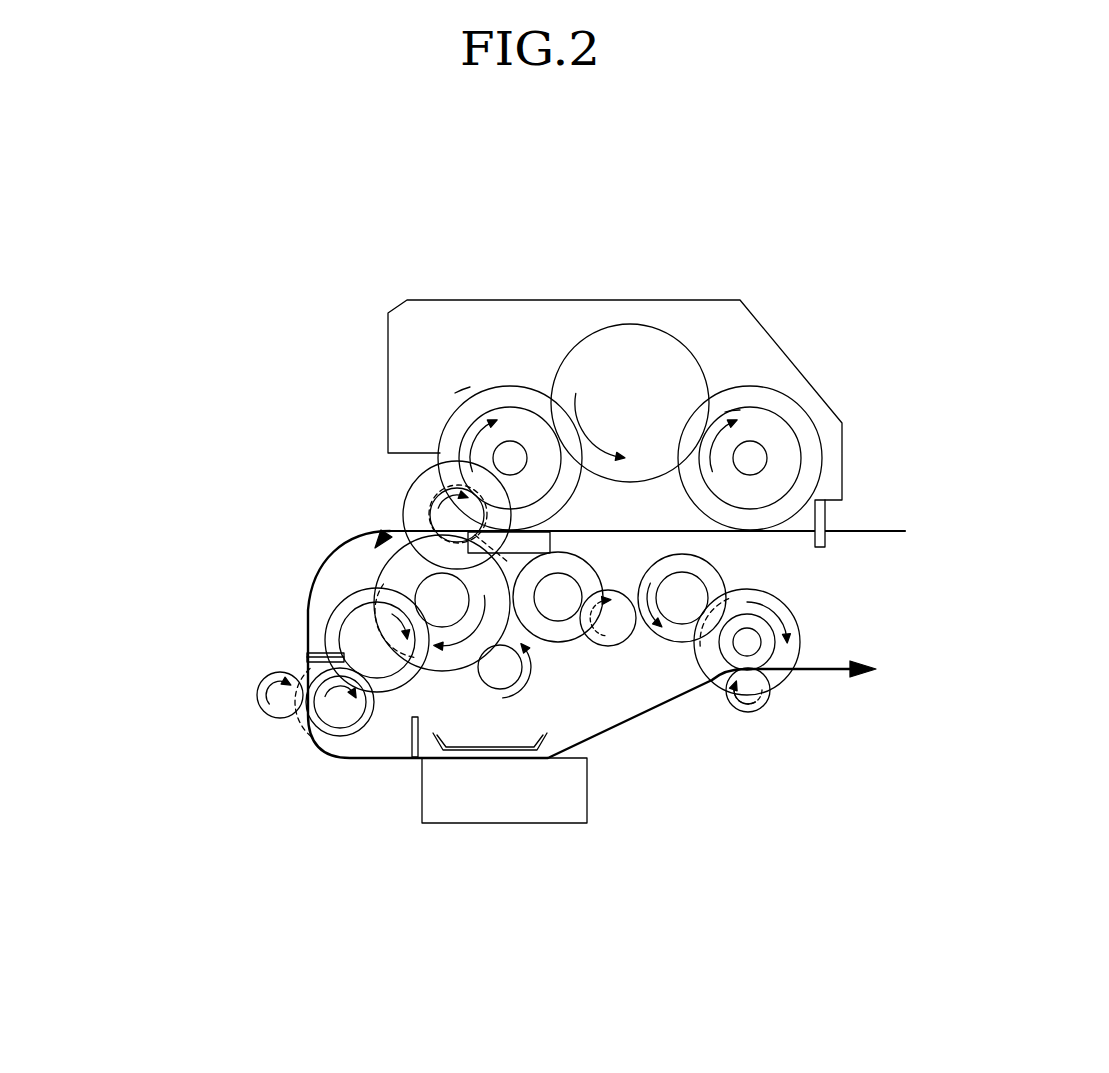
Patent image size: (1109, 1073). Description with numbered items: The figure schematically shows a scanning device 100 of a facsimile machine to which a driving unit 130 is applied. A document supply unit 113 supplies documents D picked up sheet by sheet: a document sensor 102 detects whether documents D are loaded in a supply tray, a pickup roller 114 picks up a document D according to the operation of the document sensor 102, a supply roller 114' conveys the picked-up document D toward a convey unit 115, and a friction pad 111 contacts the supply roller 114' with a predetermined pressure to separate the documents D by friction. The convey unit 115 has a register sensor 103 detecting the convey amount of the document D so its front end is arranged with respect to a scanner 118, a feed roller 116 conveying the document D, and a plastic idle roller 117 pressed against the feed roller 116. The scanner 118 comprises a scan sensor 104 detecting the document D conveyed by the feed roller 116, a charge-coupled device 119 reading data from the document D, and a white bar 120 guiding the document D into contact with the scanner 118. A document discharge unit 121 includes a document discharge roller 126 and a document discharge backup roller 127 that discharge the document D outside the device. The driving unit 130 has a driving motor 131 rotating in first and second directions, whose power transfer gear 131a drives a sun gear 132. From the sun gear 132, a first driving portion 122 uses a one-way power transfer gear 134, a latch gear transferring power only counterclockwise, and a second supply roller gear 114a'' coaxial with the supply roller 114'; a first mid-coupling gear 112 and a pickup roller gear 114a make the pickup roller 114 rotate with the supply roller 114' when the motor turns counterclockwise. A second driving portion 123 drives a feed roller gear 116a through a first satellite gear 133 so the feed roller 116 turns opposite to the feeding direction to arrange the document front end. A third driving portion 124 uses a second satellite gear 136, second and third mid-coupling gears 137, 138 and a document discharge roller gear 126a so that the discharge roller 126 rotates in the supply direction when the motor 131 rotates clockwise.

The scanning device 100 is at (338, 247).
The document sensor 102 is at (823, 513).
The register sensor 103 is at (307, 657).
The scan sensor 104 is at (410, 742).
The friction pad 111 is at (542, 535).
The first mid-coupling gear 112 is at (640, 340).
The document supply unit 113 is at (580, 296).
The pickup roller 114 is at (756, 391).
The pickup roller gear 114a is at (734, 332).
The supply roller 114' is at (501, 377).
The second supply roller gear 114a'' is at (375, 357).
The convey unit 115 is at (153, 640).
The feed roller 116 is at (312, 714).
The feed roller gear 116a is at (335, 653).
The idle roller 117 is at (257, 695).
The scanner 118 is at (542, 912).
The charge-coupled device 119 is at (443, 817).
The white bar 120 is at (510, 790).
The document discharge unit 121 is at (910, 687).
The first driving portion 122 is at (288, 307).
The second driving portion 123 is at (200, 552).
The third driving portion 124 is at (860, 840).
The document discharge roller 126 is at (768, 650).
The document discharge roller gear 126a is at (705, 672).
The document discharge backup roller 127 is at (770, 707).
The driving unit 130 is at (375, 532).
The driving motor 131 is at (462, 673).
The power transfer gear 131a is at (490, 683).
The sun gear 132 is at (387, 568).
The first satellite gear 133 is at (336, 608).
The one-way power transfer gear 134 is at (422, 477).
The second satellite gear 136 is at (560, 642).
The second mid-coupling gear 137 is at (612, 646).
The third mid-coupling gear 138 is at (667, 642).
The document D is at (885, 530).